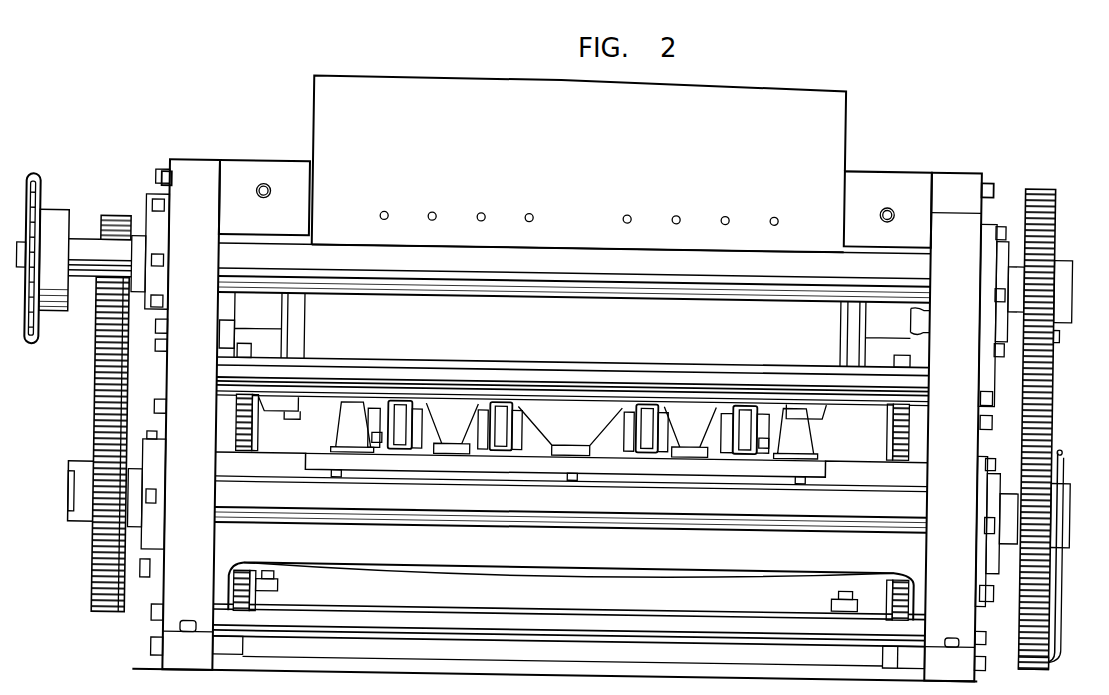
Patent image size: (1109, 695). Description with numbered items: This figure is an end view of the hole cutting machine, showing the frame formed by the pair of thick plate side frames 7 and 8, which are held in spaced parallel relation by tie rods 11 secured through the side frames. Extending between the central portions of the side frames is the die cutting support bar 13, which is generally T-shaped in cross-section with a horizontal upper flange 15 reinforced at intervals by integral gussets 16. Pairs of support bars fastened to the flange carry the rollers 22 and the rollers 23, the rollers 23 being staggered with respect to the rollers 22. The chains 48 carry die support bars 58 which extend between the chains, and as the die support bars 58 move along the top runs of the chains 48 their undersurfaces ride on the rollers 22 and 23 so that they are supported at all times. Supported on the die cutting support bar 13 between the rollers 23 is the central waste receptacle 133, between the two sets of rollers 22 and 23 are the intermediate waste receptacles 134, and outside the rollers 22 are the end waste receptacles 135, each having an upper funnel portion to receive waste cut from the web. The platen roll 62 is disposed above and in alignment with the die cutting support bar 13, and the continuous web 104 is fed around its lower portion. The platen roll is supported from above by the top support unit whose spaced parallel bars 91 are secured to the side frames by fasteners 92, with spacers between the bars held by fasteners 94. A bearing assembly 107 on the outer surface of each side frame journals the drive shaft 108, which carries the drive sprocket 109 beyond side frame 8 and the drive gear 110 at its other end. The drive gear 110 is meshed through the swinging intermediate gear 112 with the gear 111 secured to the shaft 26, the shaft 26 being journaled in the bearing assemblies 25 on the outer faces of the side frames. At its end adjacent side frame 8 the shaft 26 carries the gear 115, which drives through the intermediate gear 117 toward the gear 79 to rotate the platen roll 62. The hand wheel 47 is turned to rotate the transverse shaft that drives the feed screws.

The side frame 7 is at (932, 548).
The side frame 8 is at (205, 546).
The tie rods 11 is at (596, 372).
The die cutting support bar 13 is at (677, 556).
The horizontal upper flange 15 is at (660, 468).
The integral gussets 16 is at (338, 476).
The rollers 22 is at (402, 406).
The rollers 23 is at (507, 406).
The bearing assemblies 25 is at (170, 462).
The shaft 26 is at (80, 488).
The hand wheel 47 is at (1080, 596).
The chains 48 is at (897, 434).
The die support bars 58 is at (607, 393).
The platen roll 62 is at (846, 350).
The gear 79 is at (117, 217).
The spaced parallel bars 91 is at (877, 173).
The fasteners 92 is at (167, 172).
The fasteners 94 is at (270, 194).
The web 104 is at (846, 114).
The bearing assembly 107 is at (150, 210).
The drive shaft 108 is at (86, 262).
The drive sprocket 109 is at (57, 214).
The drive gear 110 is at (1050, 213).
The gear 111 is at (1050, 652).
The intermediate gear 112 is at (1048, 343).
The gear 115 is at (100, 548).
The intermediate gear 117 is at (99, 362).
The central waste receptacle 133 is at (563, 416).
The intermediate waste receptacles 134 is at (452, 416).
The end waste receptacles 135 is at (353, 410).